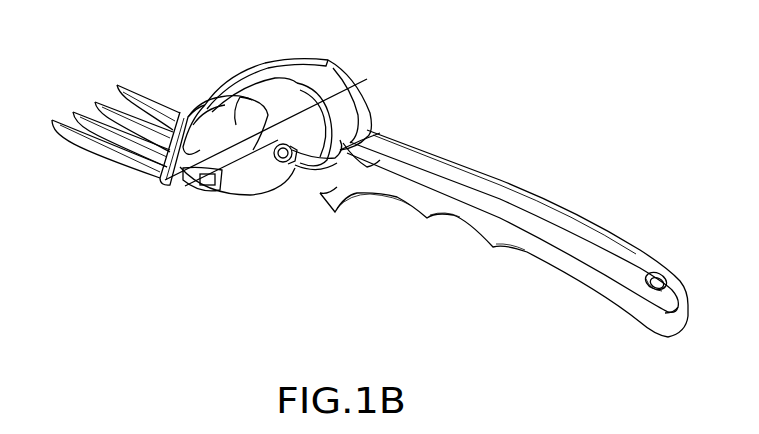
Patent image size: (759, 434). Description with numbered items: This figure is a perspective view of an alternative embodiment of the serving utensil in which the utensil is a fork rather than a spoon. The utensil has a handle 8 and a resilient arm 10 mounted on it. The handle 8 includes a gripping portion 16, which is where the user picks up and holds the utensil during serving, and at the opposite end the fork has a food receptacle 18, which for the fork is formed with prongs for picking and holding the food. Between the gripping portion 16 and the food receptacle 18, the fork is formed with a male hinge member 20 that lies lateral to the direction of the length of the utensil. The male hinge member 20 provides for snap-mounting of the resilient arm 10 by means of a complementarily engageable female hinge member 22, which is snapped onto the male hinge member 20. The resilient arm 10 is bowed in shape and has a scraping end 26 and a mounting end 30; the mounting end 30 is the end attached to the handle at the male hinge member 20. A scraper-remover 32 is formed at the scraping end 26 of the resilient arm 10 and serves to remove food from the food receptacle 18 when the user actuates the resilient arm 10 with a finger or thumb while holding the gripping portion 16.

The handle 8 is at (588, 177).
The resilient arm 10 is at (387, 81).
The gripping portion 16 is at (453, 200).
The food receptacle 18 is at (150, 107).
The male hinge member 20 is at (278, 160).
The female hinge member 22 is at (293, 165).
The scraping end 26 is at (232, 150).
The mounting end 30 is at (343, 100).
The scraper-remover 32 is at (203, 97).